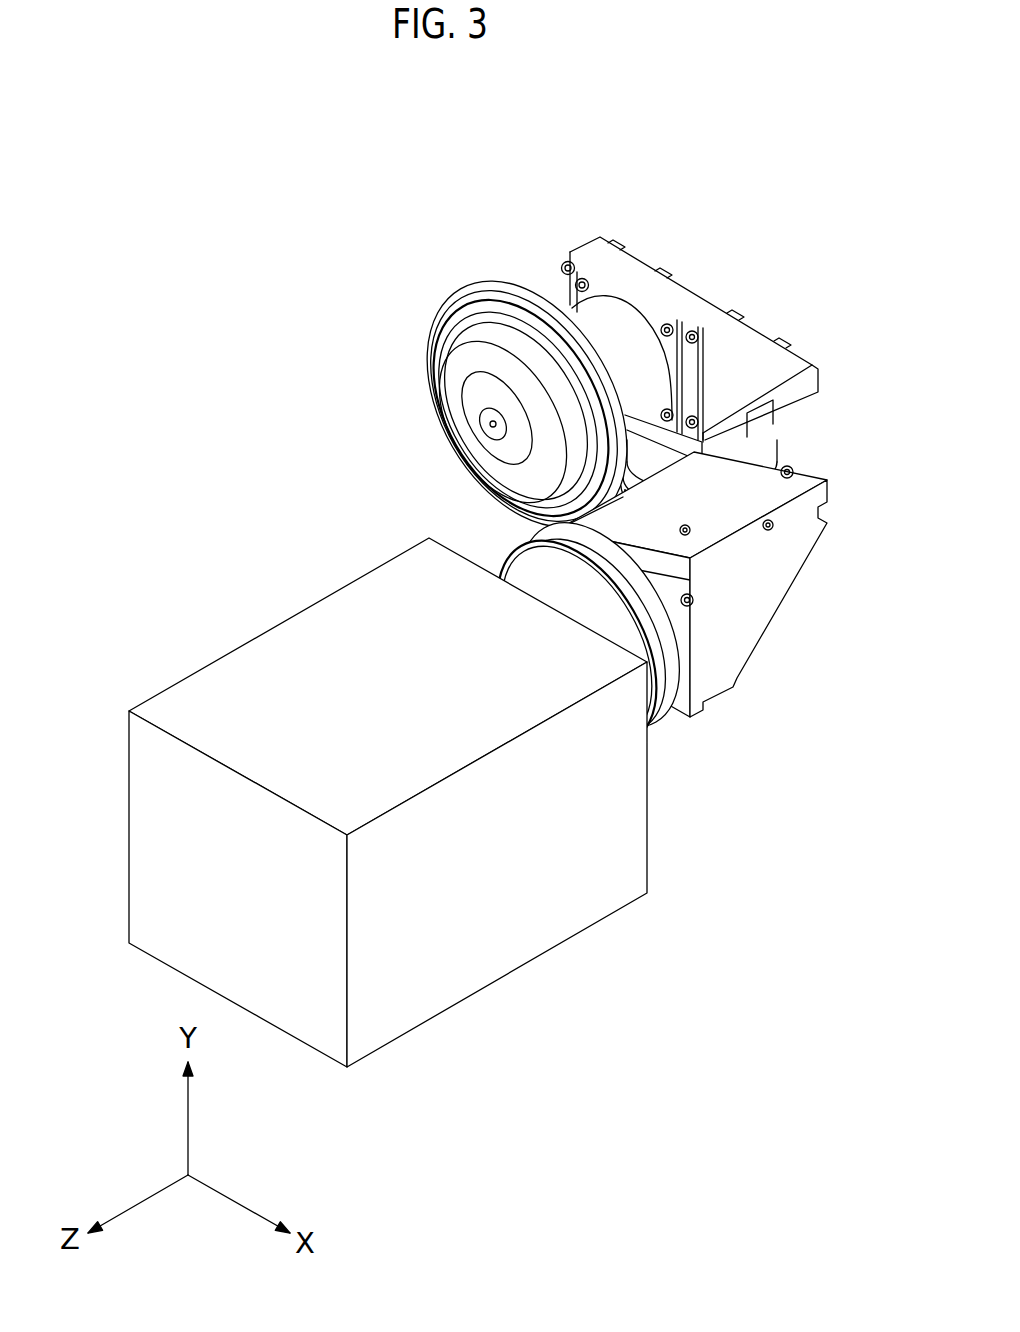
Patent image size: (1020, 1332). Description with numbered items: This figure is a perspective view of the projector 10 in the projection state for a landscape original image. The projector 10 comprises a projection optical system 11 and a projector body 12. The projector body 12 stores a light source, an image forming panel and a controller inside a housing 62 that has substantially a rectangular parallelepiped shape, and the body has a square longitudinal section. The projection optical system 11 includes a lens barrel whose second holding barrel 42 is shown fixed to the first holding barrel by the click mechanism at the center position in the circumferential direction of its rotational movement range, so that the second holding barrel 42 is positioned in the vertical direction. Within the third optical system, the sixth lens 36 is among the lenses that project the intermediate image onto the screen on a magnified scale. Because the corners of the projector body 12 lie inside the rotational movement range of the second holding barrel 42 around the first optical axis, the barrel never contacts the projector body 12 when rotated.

The projector 10 is at (506, 615).
The projection optical system 11 is at (584, 338).
The projector body 12 is at (388, 827).
The sixth lens 36 is at (463, 358).
The second holding barrel 42 is at (770, 622).
The housing 62 is at (542, 945).